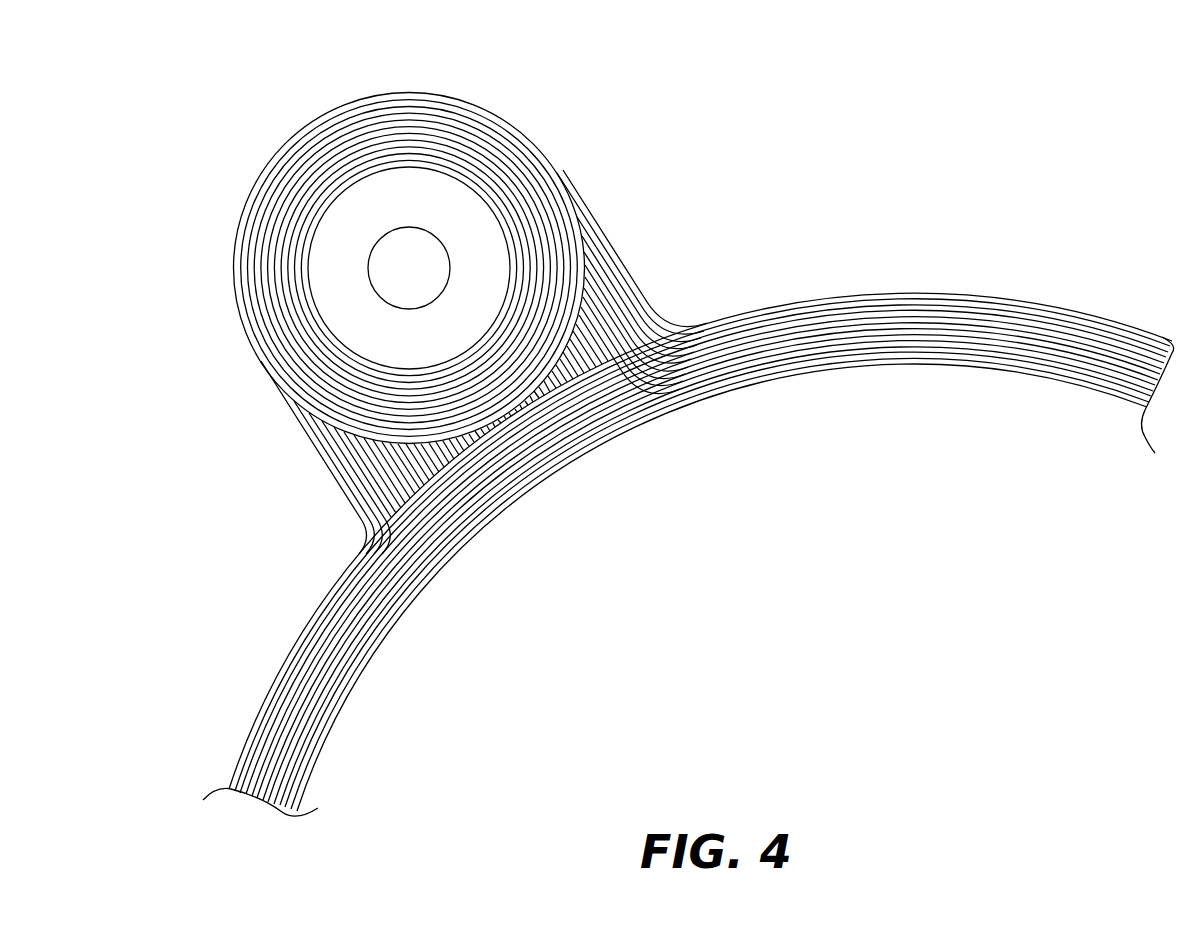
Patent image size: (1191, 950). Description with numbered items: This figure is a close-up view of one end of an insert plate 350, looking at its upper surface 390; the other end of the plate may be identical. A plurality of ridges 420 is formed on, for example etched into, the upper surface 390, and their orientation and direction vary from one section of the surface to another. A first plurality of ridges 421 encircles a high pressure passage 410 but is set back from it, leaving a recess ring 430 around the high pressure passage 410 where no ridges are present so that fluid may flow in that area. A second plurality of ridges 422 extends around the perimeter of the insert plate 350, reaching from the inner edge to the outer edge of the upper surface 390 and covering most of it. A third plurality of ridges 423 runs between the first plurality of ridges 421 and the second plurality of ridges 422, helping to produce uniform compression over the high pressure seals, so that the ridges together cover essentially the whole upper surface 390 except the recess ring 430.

The insert plate 350 is at (745, 174).
The upper surface 390 is at (633, 279).
The high pressure passage 410 is at (417, 257).
The plurality of ridges 420 is at (337, 582).
The first plurality of ridges 421 is at (283, 148).
The second plurality of ridges 422 is at (900, 299).
The third plurality of ridges 423 is at (419, 459).
The recess ring 430 is at (367, 193).